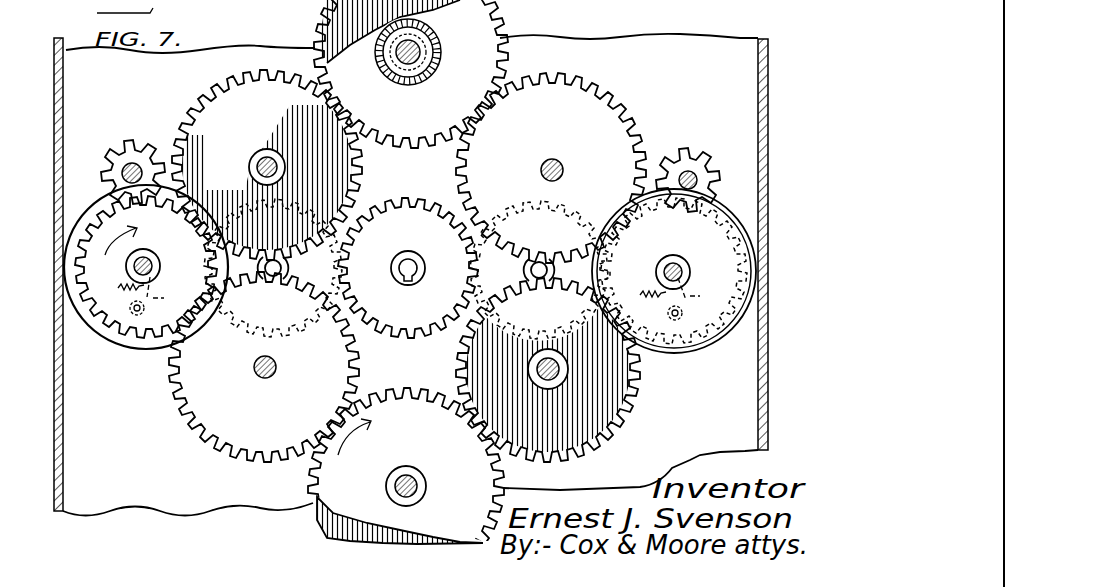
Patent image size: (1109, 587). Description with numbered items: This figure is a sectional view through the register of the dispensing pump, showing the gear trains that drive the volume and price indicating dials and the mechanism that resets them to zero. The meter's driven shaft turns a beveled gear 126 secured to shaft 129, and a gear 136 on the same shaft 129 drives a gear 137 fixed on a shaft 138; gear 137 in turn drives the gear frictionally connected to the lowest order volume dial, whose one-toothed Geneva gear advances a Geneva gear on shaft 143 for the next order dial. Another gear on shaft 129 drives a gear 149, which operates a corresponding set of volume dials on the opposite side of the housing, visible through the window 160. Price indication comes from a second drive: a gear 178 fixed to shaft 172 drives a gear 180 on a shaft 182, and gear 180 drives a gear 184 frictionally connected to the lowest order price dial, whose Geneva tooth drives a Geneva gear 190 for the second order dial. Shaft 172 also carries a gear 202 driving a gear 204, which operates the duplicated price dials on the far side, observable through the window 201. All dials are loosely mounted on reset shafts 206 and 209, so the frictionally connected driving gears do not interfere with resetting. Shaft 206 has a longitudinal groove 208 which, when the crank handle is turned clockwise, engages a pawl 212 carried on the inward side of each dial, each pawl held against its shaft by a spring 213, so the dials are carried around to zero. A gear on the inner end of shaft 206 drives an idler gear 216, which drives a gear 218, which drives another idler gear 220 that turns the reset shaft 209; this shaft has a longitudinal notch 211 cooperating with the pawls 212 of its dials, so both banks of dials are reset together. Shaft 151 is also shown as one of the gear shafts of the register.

The beveled gear 126 is at (446, 48).
The shaft 129 is at (413, 62).
The gear 136 is at (318, 20).
The gear 137 is at (230, 80).
The shaft 138 is at (267, 162).
The shaft 143 is at (134, 160).
The gear 149 is at (541, 92).
The shaft of gear 149 151 is at (555, 160).
The window 160 is at (768, 240).
The shaft 172 is at (394, 486).
The gear 178 is at (423, 392).
The gear 180 is at (200, 399).
The shaft 182 is at (262, 378).
The gear 184 is at (127, 323).
The Geneva gear 190 is at (660, 172).
The window 201 is at (57, 285).
The gear 202 is at (326, 528).
The gear 204 is at (612, 393).
The shaft 206 is at (147, 262).
The groove 208 is at (152, 266).
The reset shaft 209 is at (669, 263).
The longitudinal notch 211 is at (681, 273).
The pawl 212 is at (442, 289).
The spring 213 is at (391, 302).
The idler gear 216 is at (323, 252).
The gear 218 is at (418, 325).
The idler gear 220 is at (518, 317).